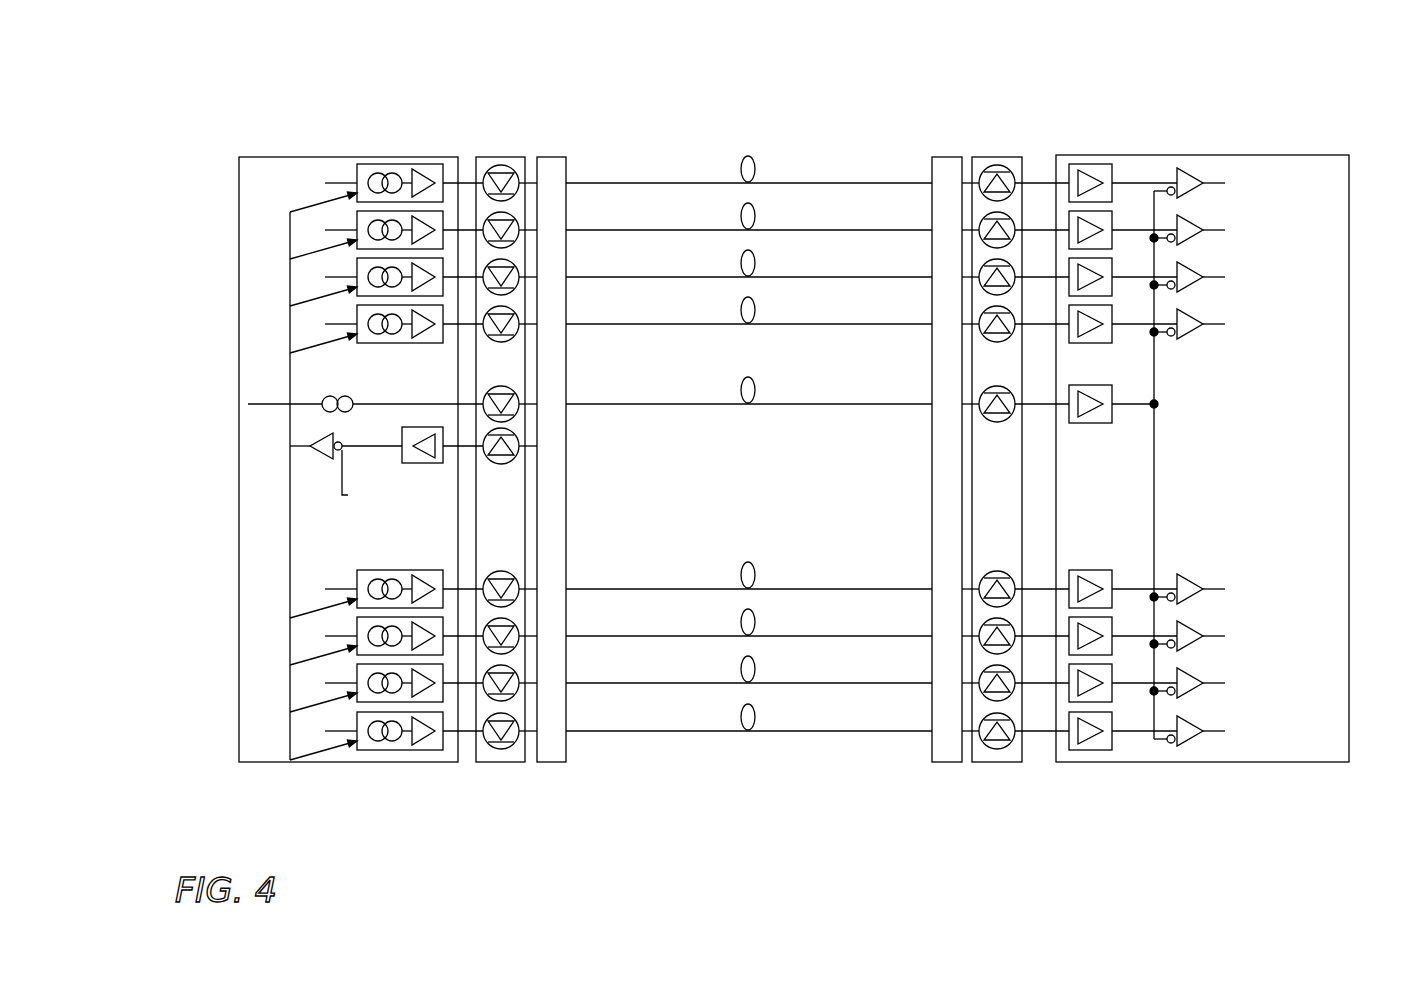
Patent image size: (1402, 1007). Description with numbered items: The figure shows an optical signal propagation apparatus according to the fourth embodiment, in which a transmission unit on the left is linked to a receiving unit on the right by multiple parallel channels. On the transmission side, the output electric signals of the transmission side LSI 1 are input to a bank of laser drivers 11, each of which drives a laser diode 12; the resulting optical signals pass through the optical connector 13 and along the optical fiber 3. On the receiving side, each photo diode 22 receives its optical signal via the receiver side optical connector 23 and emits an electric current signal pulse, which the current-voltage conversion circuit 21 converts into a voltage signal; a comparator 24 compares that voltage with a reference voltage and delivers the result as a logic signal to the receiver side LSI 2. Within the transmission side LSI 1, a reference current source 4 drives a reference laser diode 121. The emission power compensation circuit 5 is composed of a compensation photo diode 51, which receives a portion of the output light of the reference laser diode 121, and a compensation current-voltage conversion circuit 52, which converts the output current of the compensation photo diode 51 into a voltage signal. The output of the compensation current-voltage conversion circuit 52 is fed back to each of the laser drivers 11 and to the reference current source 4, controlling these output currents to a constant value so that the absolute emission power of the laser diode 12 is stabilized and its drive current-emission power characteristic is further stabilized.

The transmission side LSI 1 is at (239, 157).
The receiver side LSI 2 is at (1203, 155).
The optical fiber 3 is at (676, 183).
The reference current source 4 is at (324, 396).
The emission power compensation circuit 5 is at (302, 422).
The laser driver 11 is at (433, 750).
The laser diode 12 is at (510, 750).
The optical connector 13 is at (547, 157).
The current-voltage conversion circuit 21 is at (1100, 762).
The photo diode 22 is at (996, 762).
The optical connector 23 is at (965, 103).
The comparator 24 is at (1195, 748).
The compensation photo diode 51 is at (537, 446).
The compensation current-voltage conversion circuit 52 is at (443, 458).
The reference laser diode 121 is at (537, 404).